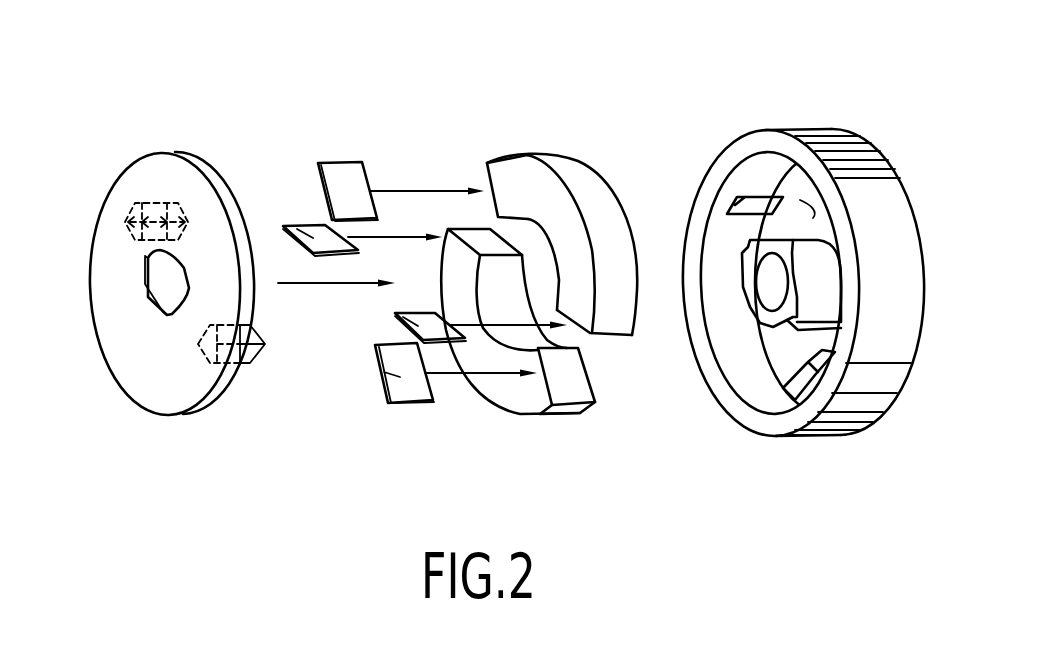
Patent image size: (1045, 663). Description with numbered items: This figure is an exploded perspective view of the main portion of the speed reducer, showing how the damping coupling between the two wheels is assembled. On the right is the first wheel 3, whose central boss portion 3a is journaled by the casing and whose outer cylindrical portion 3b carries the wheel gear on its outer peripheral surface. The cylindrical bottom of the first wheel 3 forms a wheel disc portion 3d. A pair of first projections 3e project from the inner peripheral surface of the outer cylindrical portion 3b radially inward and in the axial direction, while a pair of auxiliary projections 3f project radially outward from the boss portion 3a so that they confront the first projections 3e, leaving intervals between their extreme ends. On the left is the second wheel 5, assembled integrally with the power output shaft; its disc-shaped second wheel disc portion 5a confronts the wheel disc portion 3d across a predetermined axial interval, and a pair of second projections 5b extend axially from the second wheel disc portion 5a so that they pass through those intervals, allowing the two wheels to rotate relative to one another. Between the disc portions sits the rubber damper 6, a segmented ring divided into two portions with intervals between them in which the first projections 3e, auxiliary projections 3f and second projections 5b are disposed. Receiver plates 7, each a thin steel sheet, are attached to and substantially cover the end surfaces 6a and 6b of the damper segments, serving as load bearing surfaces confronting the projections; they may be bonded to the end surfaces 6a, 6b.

The first wheel 3 is at (848, 268).
The boss portion 3a is at (663, 283).
The outer cylindrical portion 3b is at (753, 377).
The wheel disc portion 3d is at (813, 218).
The first projections 3e is at (757, 200).
The auxiliary projections 3f is at (753, 250).
The second wheel 5 is at (147, 265).
The second wheel disc portion 5a is at (150, 162).
The second projections 5b is at (163, 212).
The rubber damper 6 is at (542, 293).
The end surface 6a is at (487, 173).
The end surface 6b is at (472, 244).
The receiver plates 7 is at (284, 227).